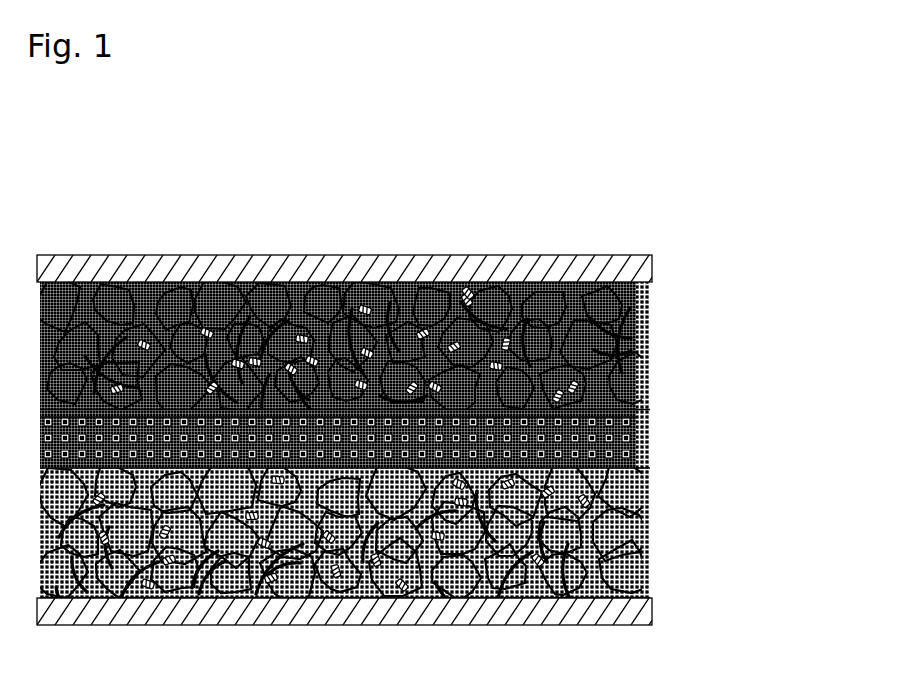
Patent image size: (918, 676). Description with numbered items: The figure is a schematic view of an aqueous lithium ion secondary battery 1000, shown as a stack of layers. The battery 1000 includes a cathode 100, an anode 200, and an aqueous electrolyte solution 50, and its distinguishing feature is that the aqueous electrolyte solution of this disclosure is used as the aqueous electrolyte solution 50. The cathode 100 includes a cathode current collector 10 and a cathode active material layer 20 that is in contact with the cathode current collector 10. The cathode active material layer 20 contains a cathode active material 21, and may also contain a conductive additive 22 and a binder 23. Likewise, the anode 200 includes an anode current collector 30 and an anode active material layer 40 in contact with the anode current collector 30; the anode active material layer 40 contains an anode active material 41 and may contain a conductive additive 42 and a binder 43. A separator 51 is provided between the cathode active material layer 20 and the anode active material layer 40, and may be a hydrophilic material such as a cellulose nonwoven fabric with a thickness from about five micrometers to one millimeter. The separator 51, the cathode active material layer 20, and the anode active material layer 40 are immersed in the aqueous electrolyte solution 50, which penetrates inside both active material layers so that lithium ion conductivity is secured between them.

The aqueous lithium ion secondary battery 1000 is at (365, 182).
The cathode 100 is at (804, 500).
The cathode current collector 10 is at (643, 612).
The cathode active material layer 20 is at (740, 463).
The cathode active material 21 is at (636, 488).
The conductive additive 22 is at (636, 573).
The binder 23 is at (638, 520).
The anode 200 is at (804, 232).
The anode current collector 30 is at (645, 262).
The anode active material layer 40 is at (740, 271).
The anode active material 41 is at (635, 297).
The conductive additive 42 is at (638, 388).
The binder 43 is at (638, 330).
The aqueous electrolyte solution 50 is at (648, 453).
The separator 51 is at (638, 421).